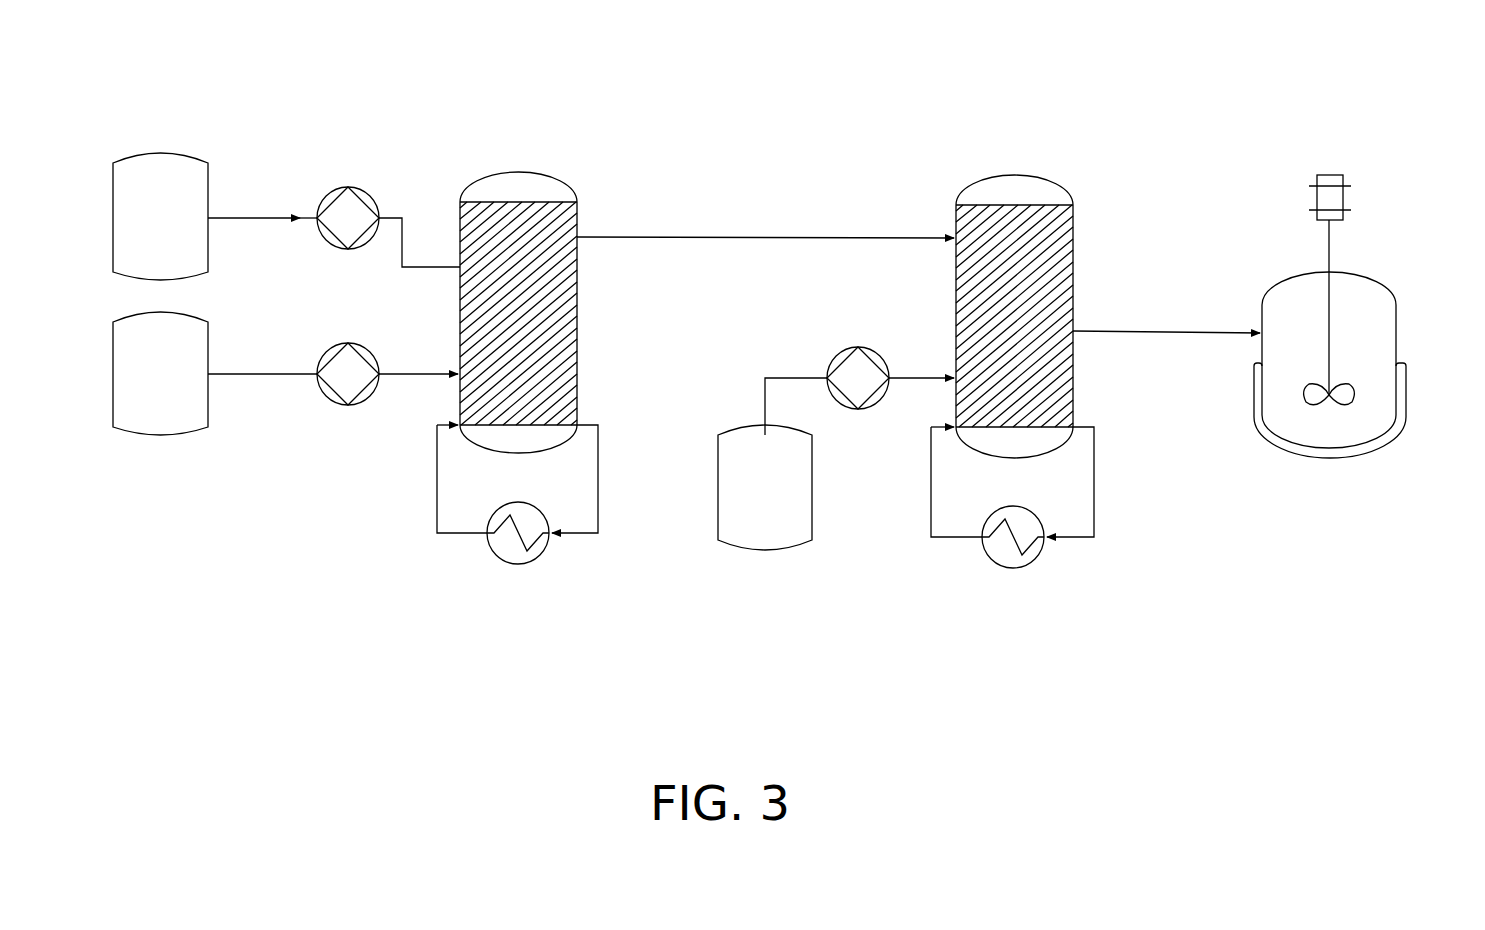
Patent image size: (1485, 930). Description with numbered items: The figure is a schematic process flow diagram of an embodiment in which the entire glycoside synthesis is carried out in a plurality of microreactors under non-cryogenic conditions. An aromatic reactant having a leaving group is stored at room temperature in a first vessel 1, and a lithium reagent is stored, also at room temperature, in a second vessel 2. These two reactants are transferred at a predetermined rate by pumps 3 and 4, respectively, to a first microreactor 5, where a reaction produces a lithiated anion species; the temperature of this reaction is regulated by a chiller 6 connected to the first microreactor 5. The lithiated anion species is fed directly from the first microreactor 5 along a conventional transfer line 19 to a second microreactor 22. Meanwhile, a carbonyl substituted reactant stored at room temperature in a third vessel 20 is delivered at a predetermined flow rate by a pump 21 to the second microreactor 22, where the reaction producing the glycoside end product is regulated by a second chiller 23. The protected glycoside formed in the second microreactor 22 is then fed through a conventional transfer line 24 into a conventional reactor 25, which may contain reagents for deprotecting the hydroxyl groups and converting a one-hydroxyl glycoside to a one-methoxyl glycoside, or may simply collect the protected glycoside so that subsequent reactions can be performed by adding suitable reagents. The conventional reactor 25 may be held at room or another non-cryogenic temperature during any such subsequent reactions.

The first vessel 1 is at (174, 150).
The second vessel 2 is at (160, 428).
The pump 3 is at (353, 188).
The pump 4 is at (350, 402).
The first microreactor 5 is at (533, 170).
The chiller 6 is at (517, 543).
The transfer line 19 is at (728, 237).
The third vessel 20 is at (773, 548).
The pump 21 is at (872, 402).
The second microreactor 22 is at (1013, 175).
The second chiller 23 is at (1012, 558).
The transfer line 24 is at (1147, 322).
The conventional reactor 25 is at (1393, 305).